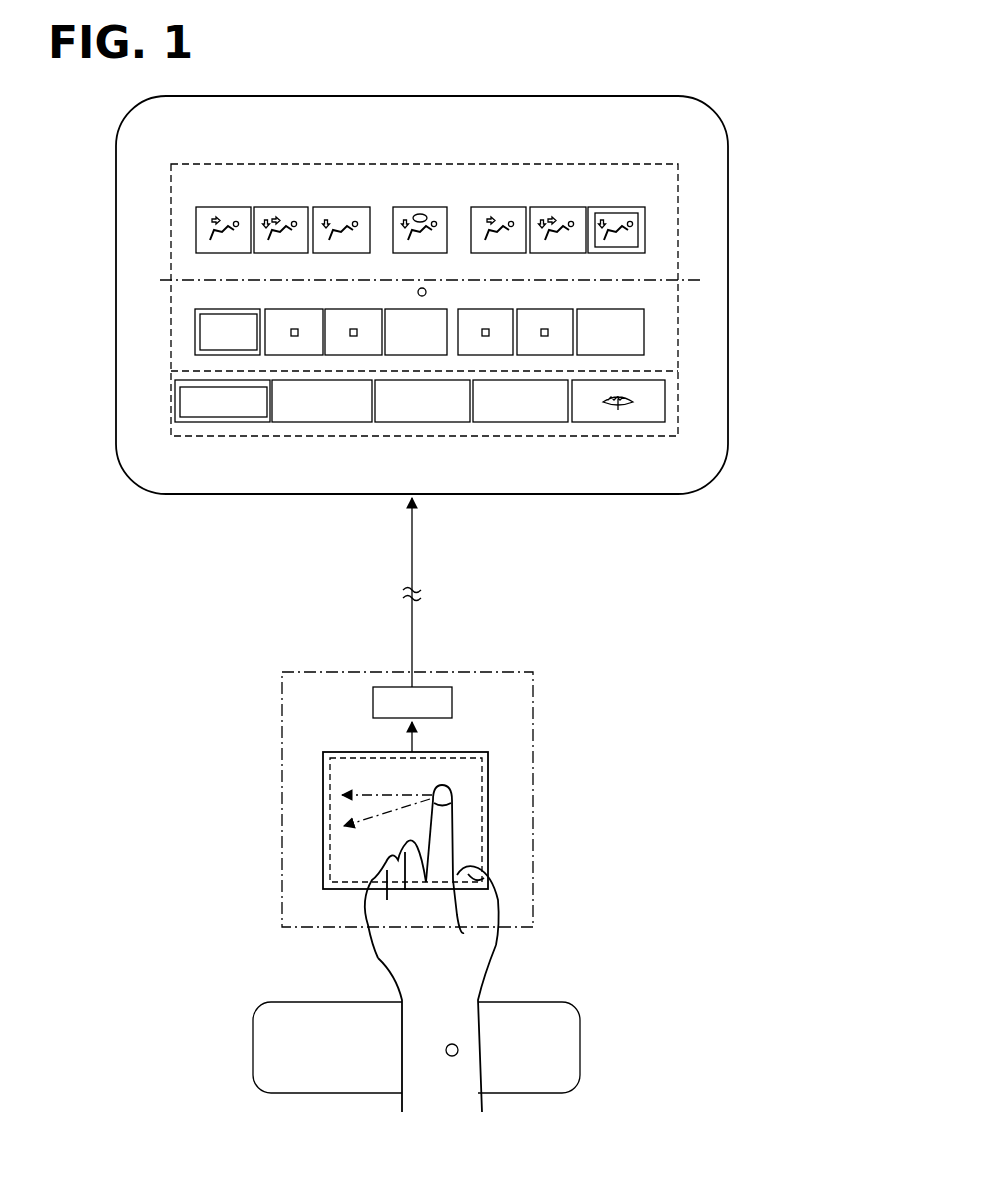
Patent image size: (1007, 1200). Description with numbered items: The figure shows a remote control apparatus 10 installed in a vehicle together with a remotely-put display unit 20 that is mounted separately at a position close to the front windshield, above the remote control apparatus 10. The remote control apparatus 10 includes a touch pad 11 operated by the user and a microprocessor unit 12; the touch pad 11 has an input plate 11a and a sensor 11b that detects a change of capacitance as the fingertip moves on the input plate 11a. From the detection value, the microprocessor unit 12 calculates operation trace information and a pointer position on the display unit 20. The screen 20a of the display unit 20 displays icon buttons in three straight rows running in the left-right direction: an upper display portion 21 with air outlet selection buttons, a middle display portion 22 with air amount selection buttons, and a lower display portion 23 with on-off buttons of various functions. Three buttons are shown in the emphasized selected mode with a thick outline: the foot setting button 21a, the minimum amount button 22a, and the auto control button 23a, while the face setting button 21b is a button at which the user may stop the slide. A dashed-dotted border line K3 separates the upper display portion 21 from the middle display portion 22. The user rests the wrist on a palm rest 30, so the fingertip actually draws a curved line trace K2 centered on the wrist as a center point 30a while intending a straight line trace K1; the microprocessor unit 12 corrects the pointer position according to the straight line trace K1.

The remote control apparatus 10 is at (276, 696).
The touch pad 11 is at (492, 776).
The input plate 11a is at (466, 832).
The sensor 11b is at (483, 812).
The microprocessor unit 12 is at (454, 706).
The display unit 20 is at (165, 496).
The screen 20a is at (254, 442).
The upper display portion 21 is at (420, 215).
The foot setting button 21a is at (633, 238).
The face setting button 21b is at (200, 230).
The middle display portion 22 is at (414, 321).
The minimum amount button 22a is at (206, 333).
The lower display portion 23 is at (414, 401).
The auto control button 23a is at (198, 401).
The palm rest 30 is at (274, 1024).
The center point 30a is at (457, 1044).
The straight line trace K1 is at (336, 788).
The curved line trace K2 is at (335, 814).
The border line K3 is at (157, 281).